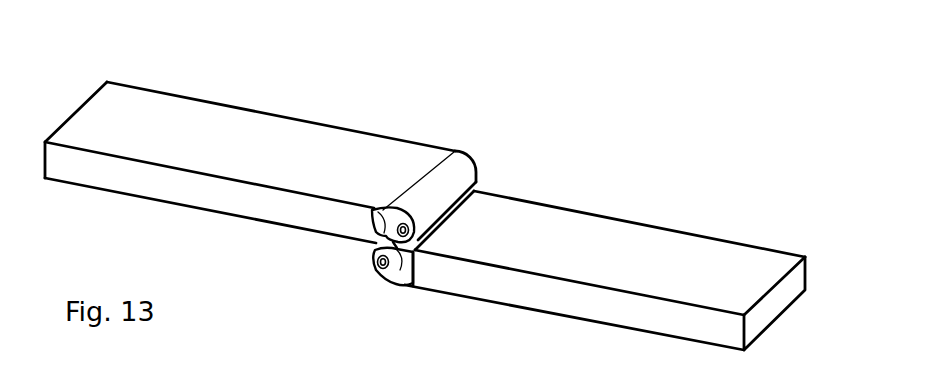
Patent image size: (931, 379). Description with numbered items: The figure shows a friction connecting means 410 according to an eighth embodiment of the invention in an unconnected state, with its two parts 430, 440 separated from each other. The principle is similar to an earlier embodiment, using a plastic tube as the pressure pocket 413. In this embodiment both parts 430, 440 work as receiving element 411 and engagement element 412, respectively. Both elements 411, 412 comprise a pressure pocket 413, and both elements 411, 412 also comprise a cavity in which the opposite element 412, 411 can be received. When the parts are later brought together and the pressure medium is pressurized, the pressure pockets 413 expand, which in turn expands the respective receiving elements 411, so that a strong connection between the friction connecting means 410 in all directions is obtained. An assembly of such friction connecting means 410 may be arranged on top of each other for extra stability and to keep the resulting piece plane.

The part 430 is at (193, 93).
The friction connecting means 410 is at (605, 225).
The part 440 is at (731, 238).
The receiving element 411 is at (382, 206).
The engagement element 412 is at (398, 207).
The pressure pocket 413 is at (378, 214).